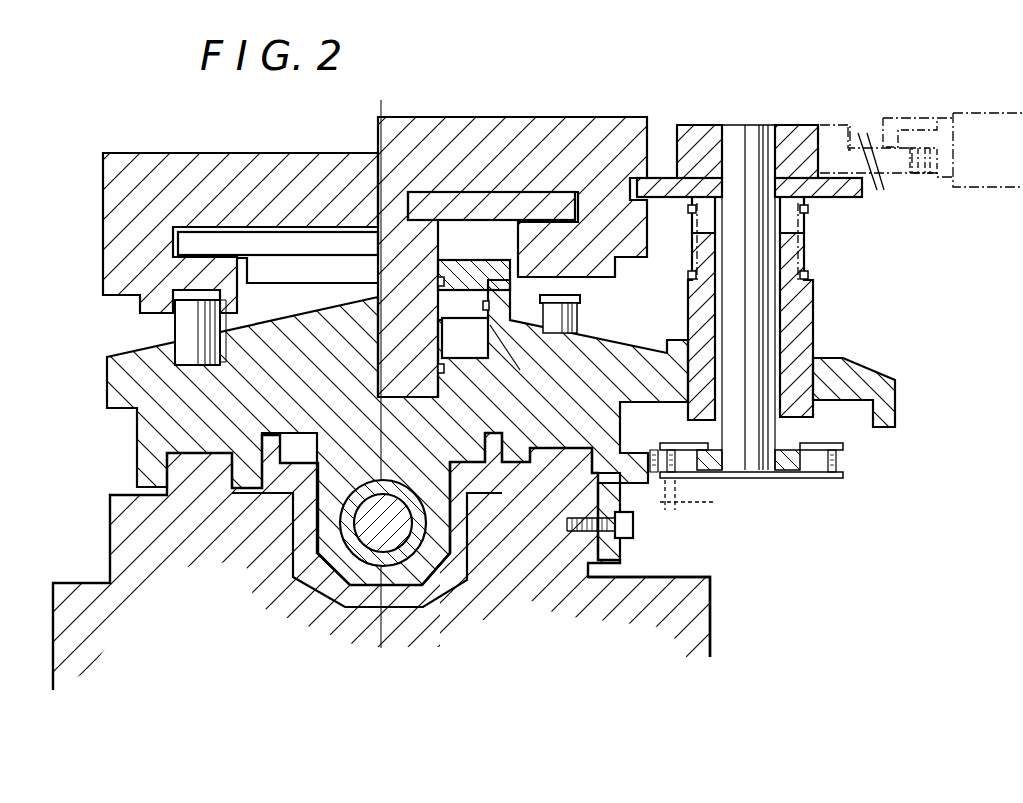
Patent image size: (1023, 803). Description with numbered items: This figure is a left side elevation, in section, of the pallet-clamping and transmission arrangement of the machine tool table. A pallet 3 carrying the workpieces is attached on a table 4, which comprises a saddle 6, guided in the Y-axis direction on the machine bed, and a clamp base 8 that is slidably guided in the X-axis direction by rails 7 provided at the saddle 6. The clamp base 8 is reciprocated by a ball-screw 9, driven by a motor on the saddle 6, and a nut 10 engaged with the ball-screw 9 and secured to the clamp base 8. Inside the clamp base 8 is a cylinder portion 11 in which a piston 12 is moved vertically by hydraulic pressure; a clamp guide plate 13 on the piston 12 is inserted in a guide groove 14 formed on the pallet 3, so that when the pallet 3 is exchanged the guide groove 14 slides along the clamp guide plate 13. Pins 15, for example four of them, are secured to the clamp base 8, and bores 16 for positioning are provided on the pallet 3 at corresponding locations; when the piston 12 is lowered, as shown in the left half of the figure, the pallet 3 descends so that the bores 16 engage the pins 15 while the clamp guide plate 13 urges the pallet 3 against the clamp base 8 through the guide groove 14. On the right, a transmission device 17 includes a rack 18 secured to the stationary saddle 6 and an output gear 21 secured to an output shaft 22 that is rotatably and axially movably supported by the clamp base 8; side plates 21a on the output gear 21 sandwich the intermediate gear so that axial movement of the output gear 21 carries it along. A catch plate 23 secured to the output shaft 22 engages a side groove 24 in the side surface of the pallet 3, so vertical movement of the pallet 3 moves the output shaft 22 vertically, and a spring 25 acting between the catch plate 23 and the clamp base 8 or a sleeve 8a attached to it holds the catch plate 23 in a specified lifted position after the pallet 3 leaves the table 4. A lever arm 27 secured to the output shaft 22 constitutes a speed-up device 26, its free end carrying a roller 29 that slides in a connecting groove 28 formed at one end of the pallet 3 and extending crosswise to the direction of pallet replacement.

The pallet 3 is at (292, 160).
The table 4 is at (132, 430).
The saddle 6 is at (697, 623).
The rails 7 is at (183, 474).
The clamp base 8 is at (117, 358).
The sleeve 8a is at (826, 346).
The ball-screw 9 is at (405, 548).
The nut 10 is at (327, 518).
The cylinder portion 11 is at (500, 338).
The piston 12 is at (465, 310).
The clamp guide plate 13 is at (487, 205).
The guide groove 14 is at (218, 237).
The pins 15 is at (187, 330).
The bores for positioning 16 is at (222, 340).
The transmission device 17 is at (652, 520).
The rack 18 is at (637, 515).
The output gear 21 is at (805, 472).
The side plates 21a is at (716, 480).
The output shaft 22 is at (766, 326).
The catch plate 23 is at (848, 192).
The side groove 24 is at (655, 188).
The spring 25 is at (810, 275).
The speed-up device 26 is at (712, 117).
The lever arm 27 is at (800, 140).
The connecting groove 28 is at (905, 128).
The roller 29 is at (926, 142).